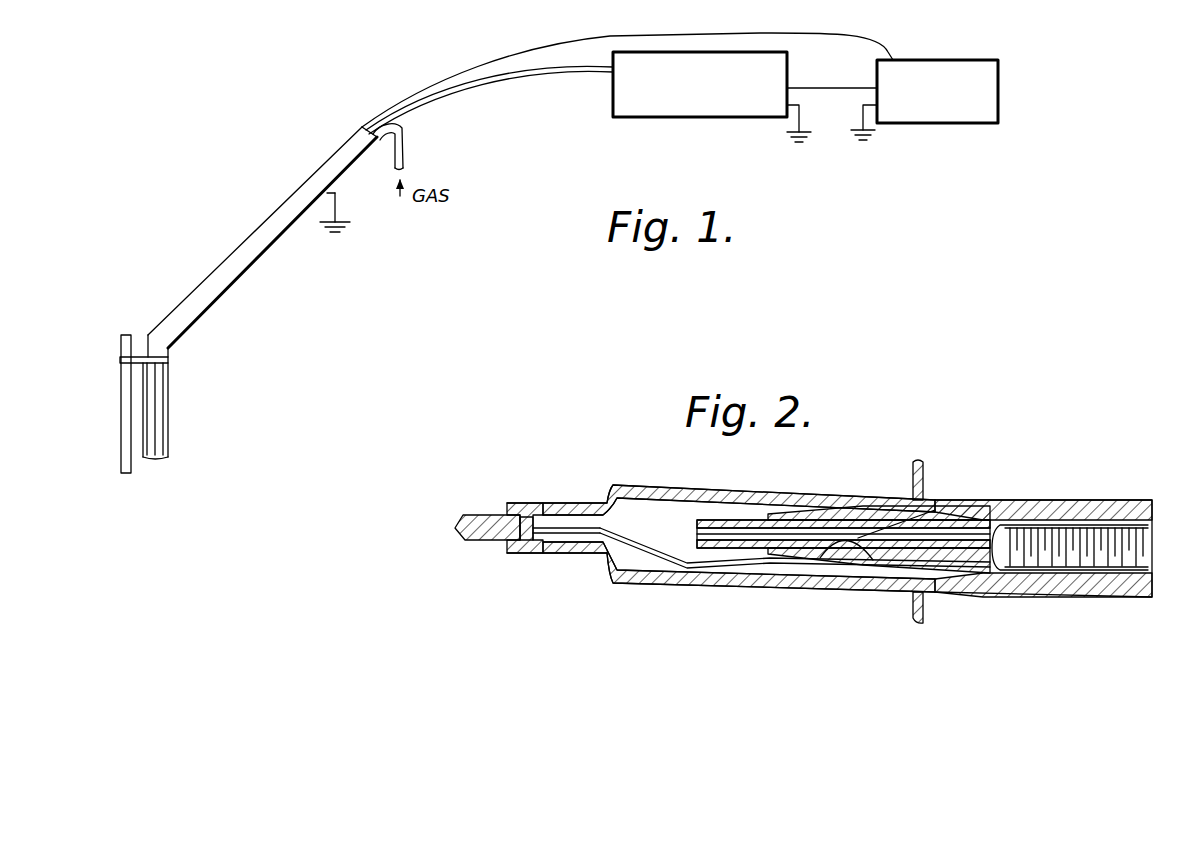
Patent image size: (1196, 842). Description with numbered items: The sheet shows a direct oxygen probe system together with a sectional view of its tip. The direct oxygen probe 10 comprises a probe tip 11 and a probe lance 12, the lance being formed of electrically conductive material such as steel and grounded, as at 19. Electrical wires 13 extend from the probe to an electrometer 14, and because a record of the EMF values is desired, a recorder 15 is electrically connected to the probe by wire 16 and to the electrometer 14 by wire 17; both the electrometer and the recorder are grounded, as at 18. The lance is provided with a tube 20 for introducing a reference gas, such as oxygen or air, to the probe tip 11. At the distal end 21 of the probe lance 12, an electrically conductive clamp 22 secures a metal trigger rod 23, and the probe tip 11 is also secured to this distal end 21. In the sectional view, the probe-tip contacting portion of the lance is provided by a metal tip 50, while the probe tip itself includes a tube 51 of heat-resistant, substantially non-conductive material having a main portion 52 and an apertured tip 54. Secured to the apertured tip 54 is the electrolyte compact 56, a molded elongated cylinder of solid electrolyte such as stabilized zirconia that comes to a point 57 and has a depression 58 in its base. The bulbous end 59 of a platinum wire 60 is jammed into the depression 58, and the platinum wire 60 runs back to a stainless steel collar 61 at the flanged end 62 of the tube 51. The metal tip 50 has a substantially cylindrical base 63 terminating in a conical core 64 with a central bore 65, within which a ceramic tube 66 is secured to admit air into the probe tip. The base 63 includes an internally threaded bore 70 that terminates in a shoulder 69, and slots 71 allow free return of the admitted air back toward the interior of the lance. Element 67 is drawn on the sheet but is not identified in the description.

In FIG. 1, the direct oxygen probe 10 is at (264, 271).
In FIG. 1, the probe tip 11 is at (174, 410).
In FIG. 1, the probe lance 12 is at (238, 240).
In FIG. 1, the electrical wires 13 is at (527, 72).
In FIG. 1, the electrometer 14 is at (660, 118).
In FIG. 1, the recorder 15 is at (950, 124).
In FIG. 1, the wire 16 is at (413, 93).
In FIG. 1, the wire 17 is at (846, 72).
In FIG. 1, the ground 18 is at (863, 115).
In FIG. 1, the ground 19 is at (340, 210).
In FIG. 1, the tube 20 is at (406, 142).
In FIG. 1, the distal end 21 is at (160, 342).
In FIG. 1, the electrically conductive clamp 22 is at (138, 356).
In FIG. 1, the metal trigger rod 23 is at (133, 460).
In FIG. 2, the metal tip 50 is at (1040, 498).
In FIG. 2, the tube 51 is at (778, 474).
In FIG. 2, the main portion 52 is at (660, 508).
In FIG. 2, the apertured tip 54 is at (532, 518).
In FIG. 2, the electrolyte compact 56 is at (500, 540).
In FIG. 2, the point 57 is at (462, 536).
In FIG. 2, the depression 58 is at (515, 543).
In FIG. 2, the bulbous end 59 is at (538, 535).
In FIG. 2, the platinum wire 60 is at (577, 535).
In FIG. 2, the stainless steel collar 61 is at (887, 495).
In FIG. 2, the flanged end 62 is at (917, 463).
In FIG. 2, the cylindrical base 63 is at (1102, 507).
In FIG. 2, the conical core 64 is at (842, 517).
In FIG. 2, the central bore 65 is at (840, 548).
In FIG. 2, the ceramic tube 66 is at (725, 550).
In FIG. 2, the lower sleeve 67 is at (995, 573).
In FIG. 2, the shoulder 69 is at (1003, 520).
In FIG. 2, the internally threaded bore 70 is at (1120, 580).
In FIG. 2, the slots 71 is at (923, 510).